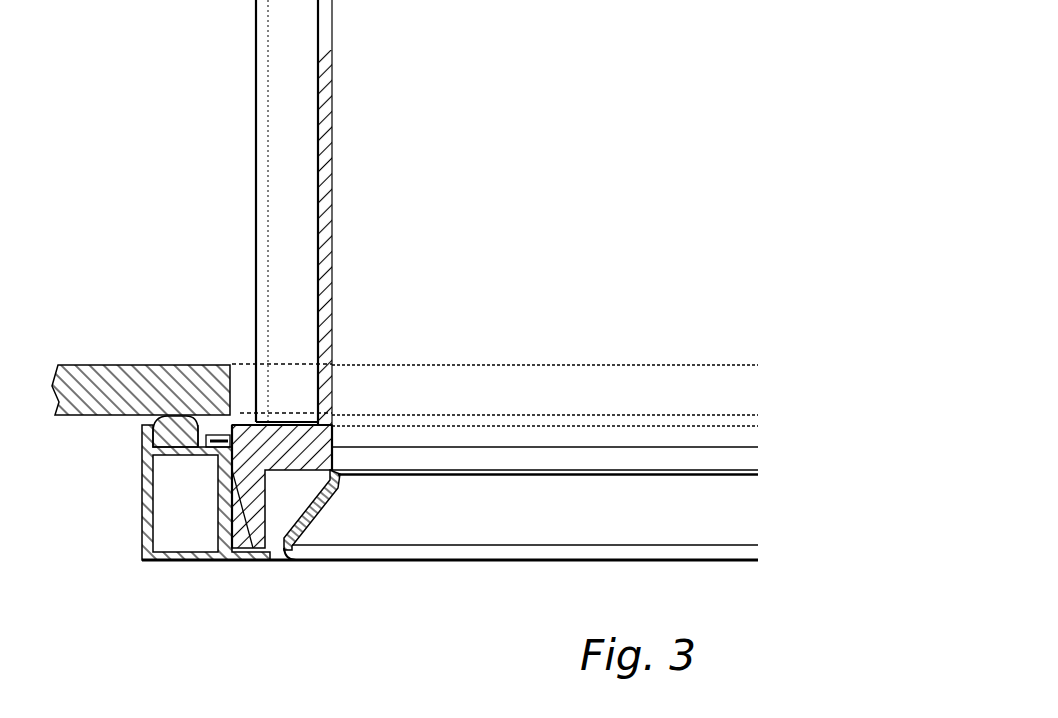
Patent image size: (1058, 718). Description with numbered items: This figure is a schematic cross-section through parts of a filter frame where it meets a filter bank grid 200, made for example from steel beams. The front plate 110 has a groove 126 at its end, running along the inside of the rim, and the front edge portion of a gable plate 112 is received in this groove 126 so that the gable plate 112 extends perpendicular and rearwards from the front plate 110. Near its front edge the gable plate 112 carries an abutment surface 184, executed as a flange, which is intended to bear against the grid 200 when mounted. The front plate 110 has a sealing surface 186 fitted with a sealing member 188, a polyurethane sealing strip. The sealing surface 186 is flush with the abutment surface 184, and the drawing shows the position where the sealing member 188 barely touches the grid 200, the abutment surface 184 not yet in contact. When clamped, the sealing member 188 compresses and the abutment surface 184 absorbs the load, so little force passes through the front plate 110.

The front plate 110 is at (343, 550).
The gable plate 112 is at (283, 145).
The groove 126 is at (228, 566).
The abutment surface 184 is at (212, 434).
The sealing surface 186 is at (142, 425).
The sealing member 188 is at (176, 437).
The filter bank grid 200 is at (107, 366).